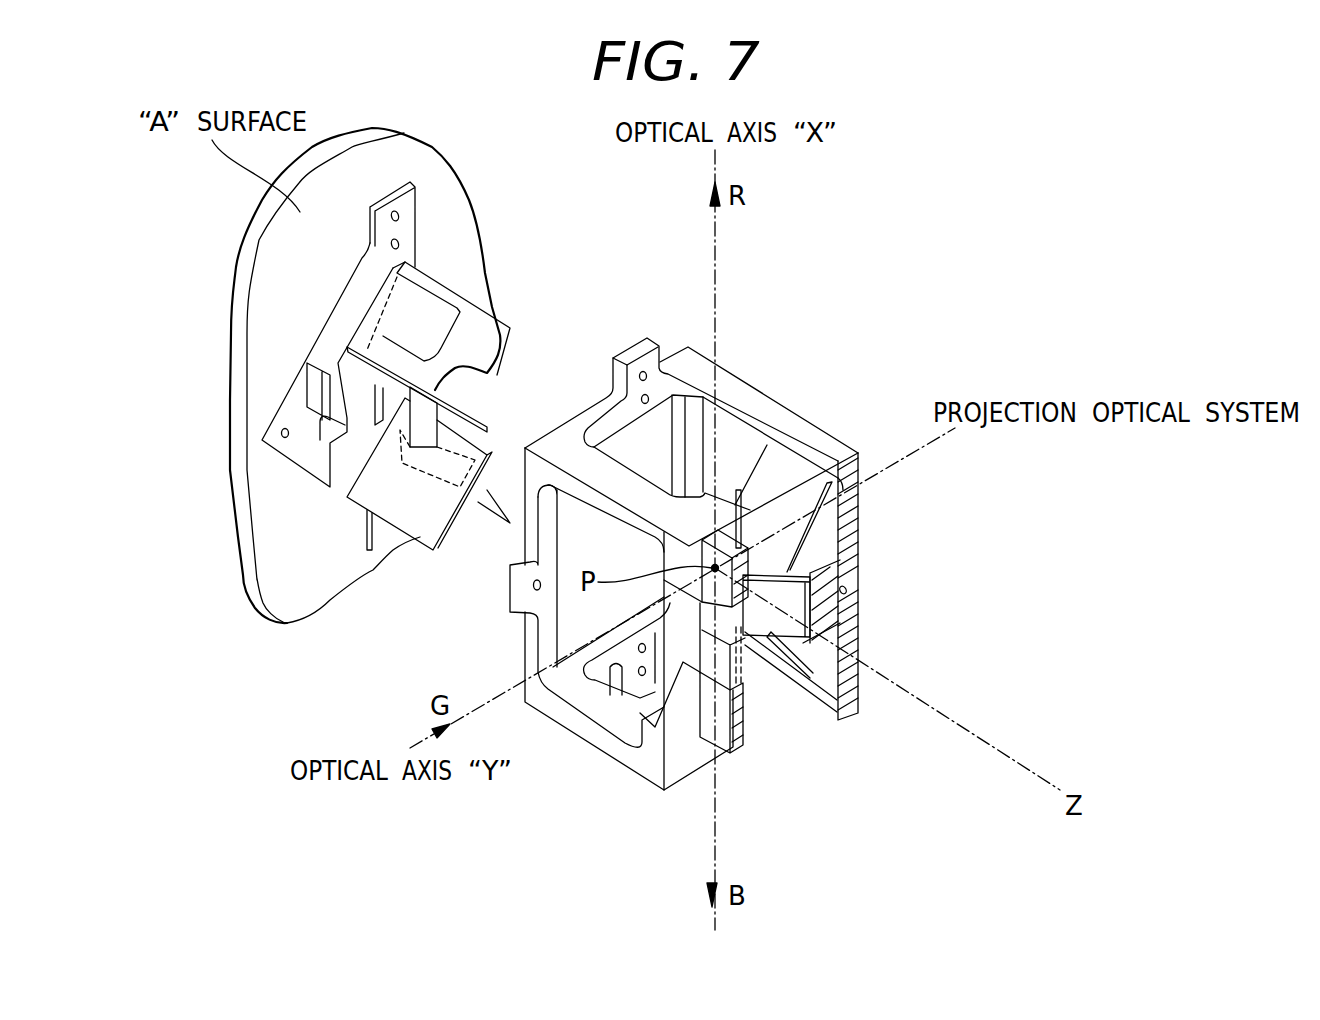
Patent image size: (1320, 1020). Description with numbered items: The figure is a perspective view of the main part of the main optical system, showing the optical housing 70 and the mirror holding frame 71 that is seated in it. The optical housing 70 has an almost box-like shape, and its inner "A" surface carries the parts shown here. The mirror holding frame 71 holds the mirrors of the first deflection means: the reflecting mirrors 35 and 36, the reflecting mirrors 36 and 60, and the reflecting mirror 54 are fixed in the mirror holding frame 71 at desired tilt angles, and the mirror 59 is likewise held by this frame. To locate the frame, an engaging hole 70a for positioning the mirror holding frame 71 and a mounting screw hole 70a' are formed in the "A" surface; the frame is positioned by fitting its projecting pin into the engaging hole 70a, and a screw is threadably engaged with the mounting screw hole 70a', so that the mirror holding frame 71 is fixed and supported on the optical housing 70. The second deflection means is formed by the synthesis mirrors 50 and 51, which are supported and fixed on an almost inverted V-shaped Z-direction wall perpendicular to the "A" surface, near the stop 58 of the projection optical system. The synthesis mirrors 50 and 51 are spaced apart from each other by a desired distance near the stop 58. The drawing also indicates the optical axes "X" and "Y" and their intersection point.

The optical housing 70 is at (263, 268).
The engaging hole 70a is at (470, 243).
The mounting screw hole 70a' is at (461, 193).
The synthesis mirror 50 is at (485, 427).
The stop 58 is at (423, 433).
The synthesis mirror 51 is at (427, 540).
The mirror holding frame 71 is at (788, 418).
The reflecting mirror 35 is at (738, 492).
The reflecting mirror 36 is at (748, 675).
The mirror 59 is at (805, 480).
The reflecting mirror 54 is at (795, 597).
The reflecting mirror 60 is at (777, 660).